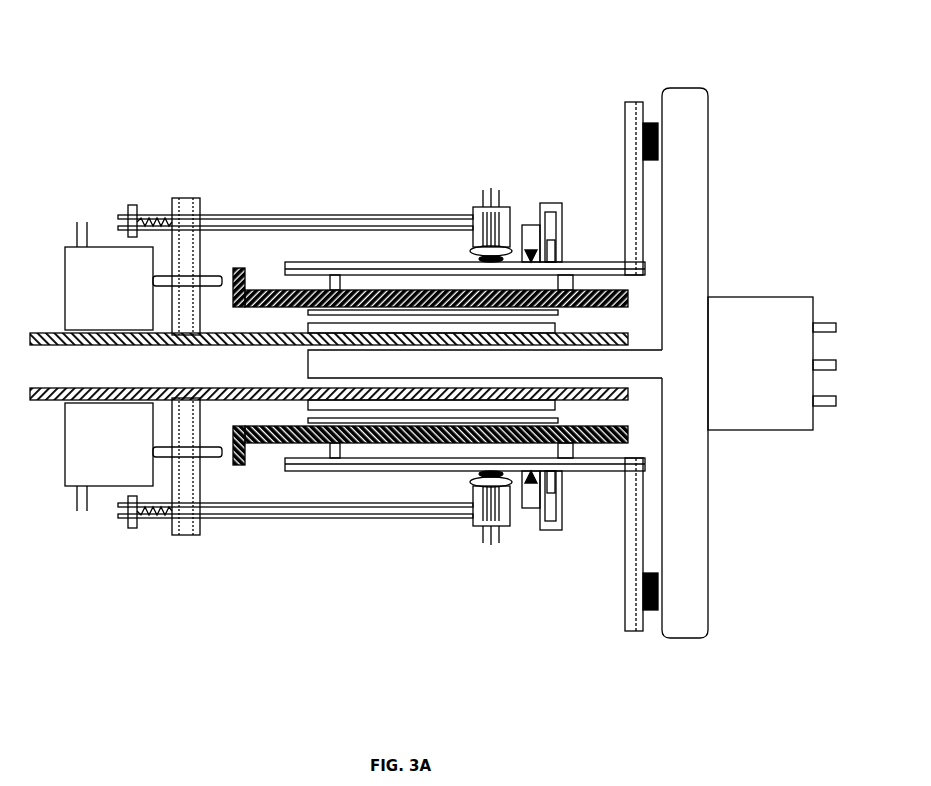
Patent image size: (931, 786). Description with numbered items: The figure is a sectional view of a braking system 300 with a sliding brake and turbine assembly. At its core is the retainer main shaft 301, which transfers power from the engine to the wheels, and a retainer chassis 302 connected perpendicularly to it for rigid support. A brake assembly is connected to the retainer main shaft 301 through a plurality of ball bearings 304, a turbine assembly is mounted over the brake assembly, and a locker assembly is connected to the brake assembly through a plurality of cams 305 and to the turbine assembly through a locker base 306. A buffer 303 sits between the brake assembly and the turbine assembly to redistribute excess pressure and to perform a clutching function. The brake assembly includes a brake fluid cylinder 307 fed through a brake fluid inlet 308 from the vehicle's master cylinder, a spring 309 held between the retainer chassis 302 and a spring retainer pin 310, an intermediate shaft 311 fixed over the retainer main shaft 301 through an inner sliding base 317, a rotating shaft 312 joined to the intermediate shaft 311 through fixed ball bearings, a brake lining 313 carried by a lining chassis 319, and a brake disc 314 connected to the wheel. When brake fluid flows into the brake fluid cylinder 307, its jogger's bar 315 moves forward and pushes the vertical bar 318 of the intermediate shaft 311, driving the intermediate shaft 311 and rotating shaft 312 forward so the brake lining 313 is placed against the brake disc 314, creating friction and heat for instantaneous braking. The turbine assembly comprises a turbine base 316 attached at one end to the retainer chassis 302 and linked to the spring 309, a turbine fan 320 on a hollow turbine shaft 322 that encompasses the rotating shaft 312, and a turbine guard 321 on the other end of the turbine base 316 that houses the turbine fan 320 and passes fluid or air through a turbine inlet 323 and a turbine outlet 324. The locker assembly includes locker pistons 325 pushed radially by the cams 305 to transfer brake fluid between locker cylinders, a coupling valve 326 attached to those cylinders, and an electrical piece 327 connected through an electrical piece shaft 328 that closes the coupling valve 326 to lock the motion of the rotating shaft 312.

The braking system 300 is at (577, 86).
The retainer main shaft 301 is at (50, 400).
The retainer chassis 302 is at (183, 535).
The buffer 303 is at (520, 472).
The ball bearings 304 is at (332, 458).
The cams 305 is at (548, 480).
The locker base 306 is at (515, 490).
The brake fluid cylinder 307 is at (65, 310).
The brake fluid inlet 308 is at (75, 237).
The spring 309 is at (153, 212).
The spring retainer pin 310 is at (130, 208).
The intermediate shaft 311 is at (248, 445).
The rotating shaft 312 is at (325, 262).
The brake lining 313 is at (650, 123).
The brake disc 314 is at (688, 88).
The jogger's bar 315 is at (217, 274).
The turbine base 316 is at (412, 518).
The inner sliding base 317 is at (405, 402).
The vertical bar 318 is at (240, 280).
The lining chassis 319 is at (637, 632).
The turbine fan 320 is at (478, 225).
The turbine guard 321 is at (500, 206).
The turbine shaft 322 is at (478, 481).
The turbine inlet 323 is at (490, 190).
The turbine outlet 324 is at (490, 545).
The locker piston 325 is at (556, 250).
The coupling valve 326 is at (540, 215).
The electrical piece 327 is at (562, 222).
The electrical piece shaft 328 is at (548, 206).